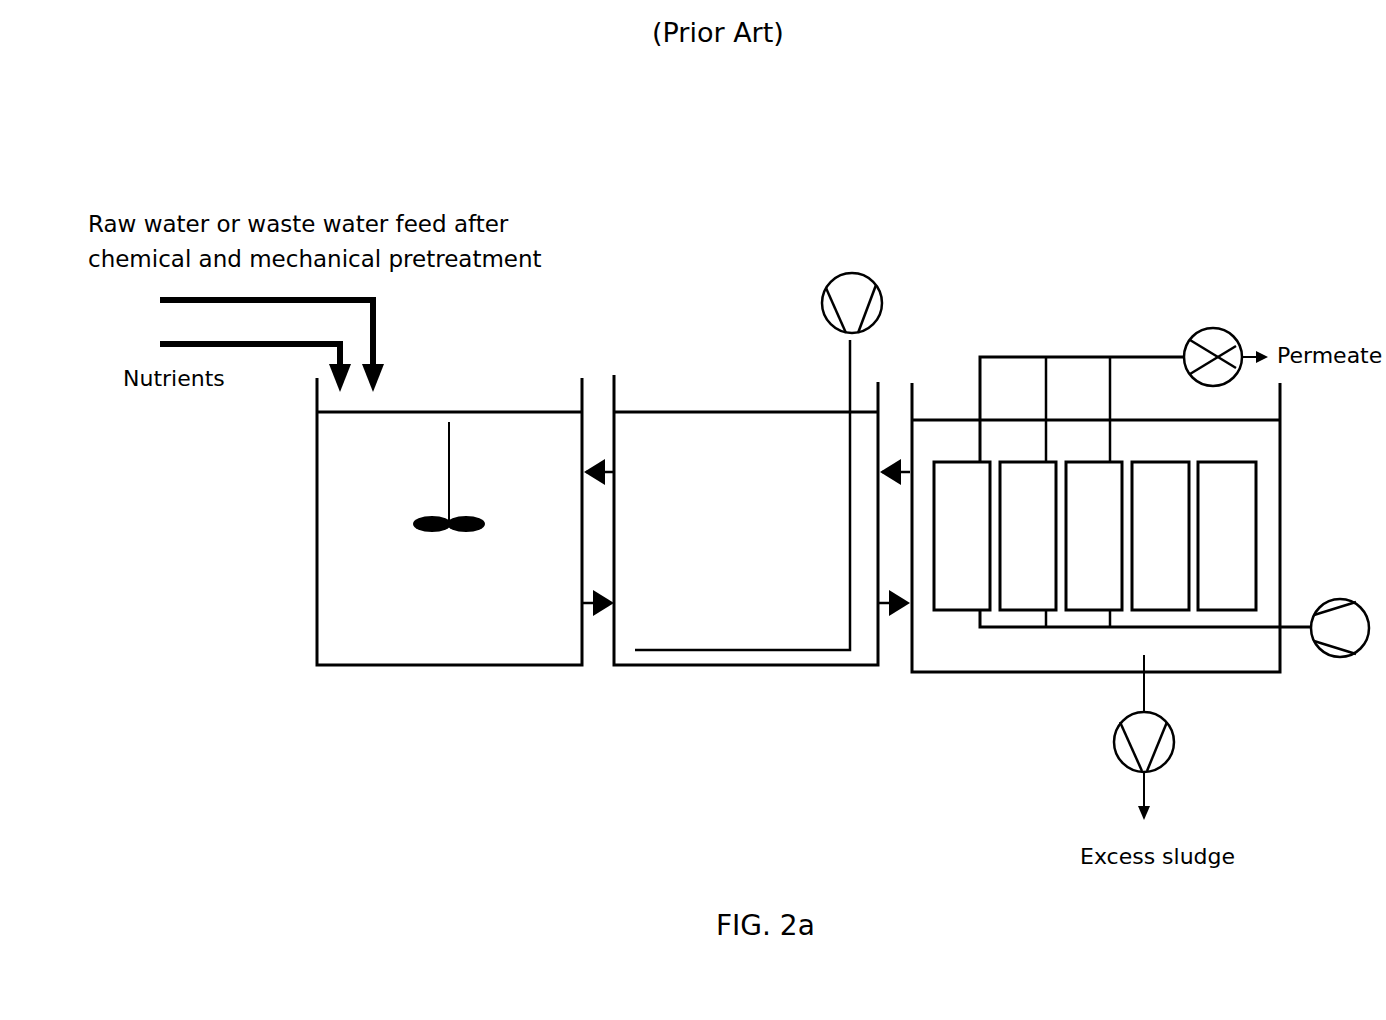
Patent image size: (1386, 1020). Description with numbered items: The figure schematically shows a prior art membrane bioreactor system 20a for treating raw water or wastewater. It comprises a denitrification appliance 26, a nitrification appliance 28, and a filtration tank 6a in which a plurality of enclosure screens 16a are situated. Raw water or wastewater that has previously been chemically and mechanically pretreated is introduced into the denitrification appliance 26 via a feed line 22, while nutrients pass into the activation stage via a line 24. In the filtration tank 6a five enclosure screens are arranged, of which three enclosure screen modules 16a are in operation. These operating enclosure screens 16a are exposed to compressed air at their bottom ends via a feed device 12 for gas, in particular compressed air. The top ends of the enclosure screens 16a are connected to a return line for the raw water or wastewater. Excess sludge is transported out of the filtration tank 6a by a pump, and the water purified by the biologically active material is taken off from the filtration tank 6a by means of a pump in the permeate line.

The membrane bioreactor system 20a is at (686, 304).
The feed line 22 is at (378, 312).
The line 24 is at (262, 352).
The denitrification appliance 26 is at (460, 665).
The nitrification appliance 28 is at (758, 668).
The filtration tank 6a is at (1047, 672).
The enclosure screen modules 16a is at (1082, 462).
The feed device for gas 12 is at (1198, 628).